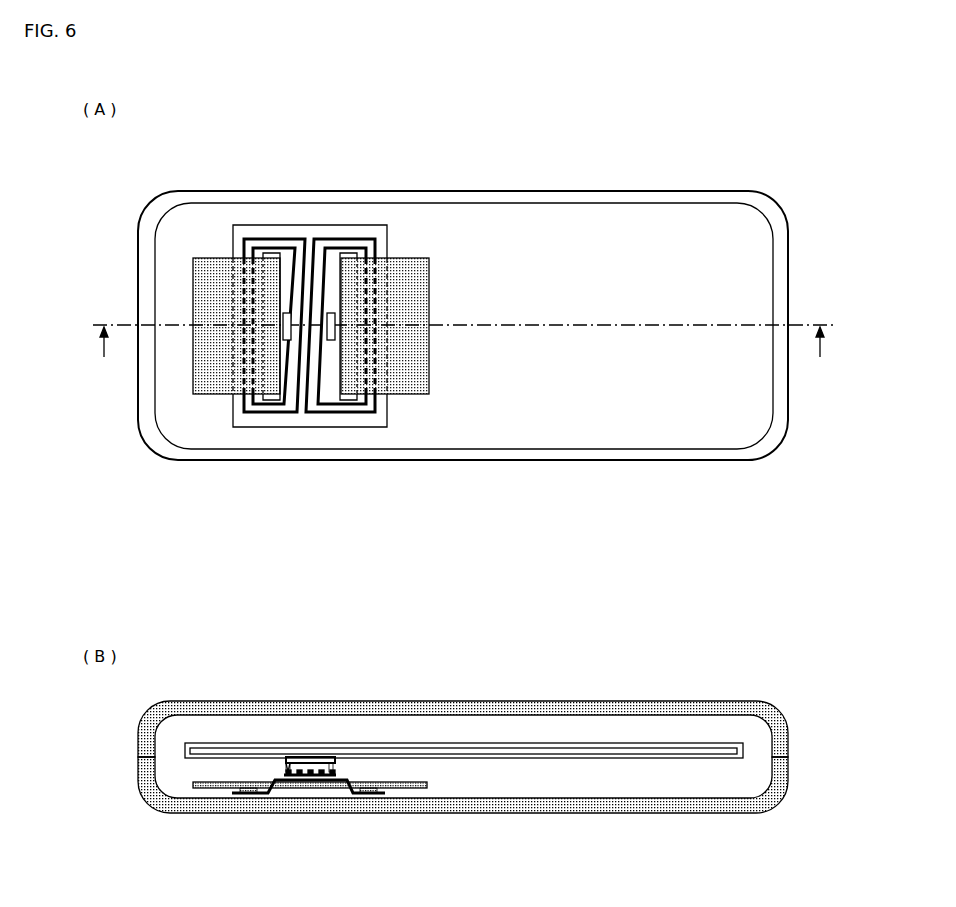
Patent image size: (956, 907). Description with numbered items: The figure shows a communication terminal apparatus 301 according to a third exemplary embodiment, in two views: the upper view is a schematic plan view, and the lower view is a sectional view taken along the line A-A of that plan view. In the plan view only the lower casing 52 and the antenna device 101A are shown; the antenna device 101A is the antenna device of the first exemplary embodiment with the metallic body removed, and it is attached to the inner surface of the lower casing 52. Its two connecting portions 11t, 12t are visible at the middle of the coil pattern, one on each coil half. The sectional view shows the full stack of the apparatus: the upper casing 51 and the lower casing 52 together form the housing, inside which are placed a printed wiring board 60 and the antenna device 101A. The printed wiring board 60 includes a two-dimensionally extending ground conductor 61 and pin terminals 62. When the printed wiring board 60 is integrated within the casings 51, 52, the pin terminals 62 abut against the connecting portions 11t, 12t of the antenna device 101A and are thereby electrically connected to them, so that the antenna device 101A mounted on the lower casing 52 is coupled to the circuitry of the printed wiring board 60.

The communication terminal apparatus 301 is at (781, 128).
The lower casing 52 is at (494, 191).
The upper casing 51 is at (494, 700).
The antenna device 101A is at (287, 489).
The connecting portion 11t is at (283, 322).
The connecting portion 12t is at (335, 322).
The ground conductor 61 is at (629, 748).
The printed wiring board 60 is at (651, 758).
The pin terminals 62 is at (283, 772).